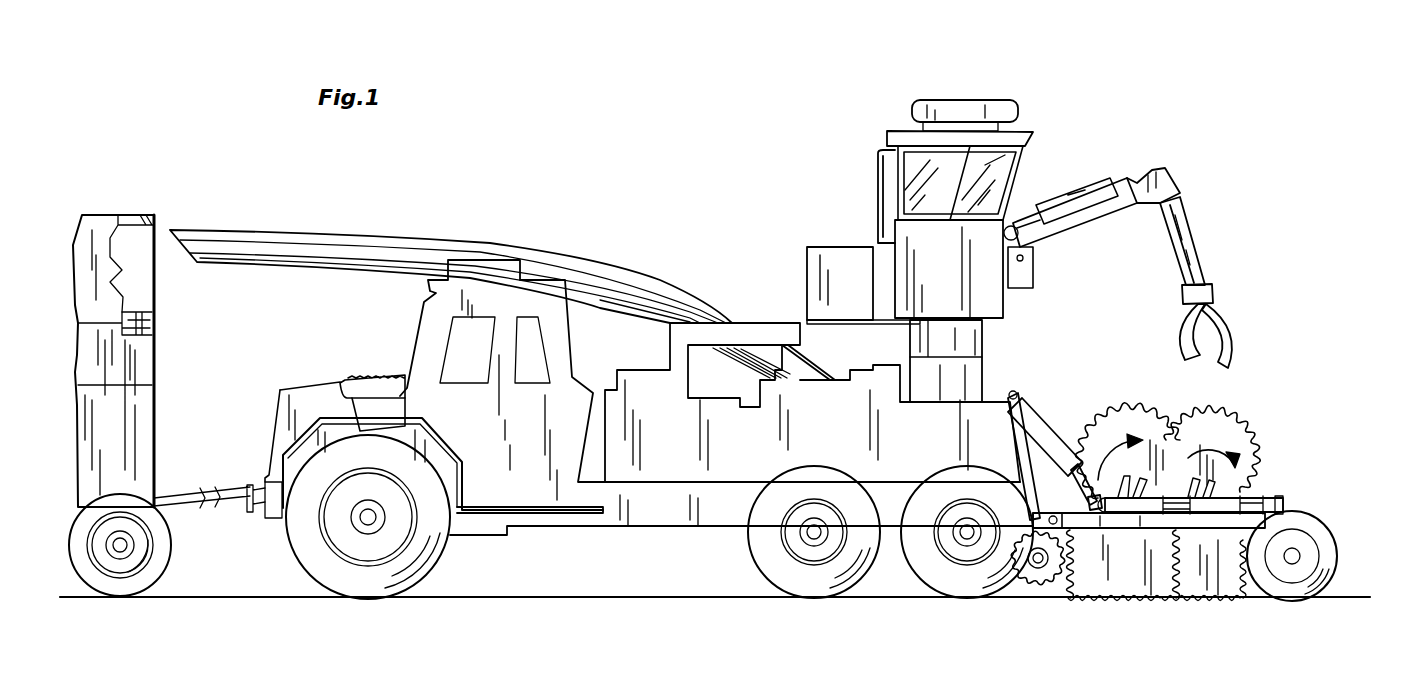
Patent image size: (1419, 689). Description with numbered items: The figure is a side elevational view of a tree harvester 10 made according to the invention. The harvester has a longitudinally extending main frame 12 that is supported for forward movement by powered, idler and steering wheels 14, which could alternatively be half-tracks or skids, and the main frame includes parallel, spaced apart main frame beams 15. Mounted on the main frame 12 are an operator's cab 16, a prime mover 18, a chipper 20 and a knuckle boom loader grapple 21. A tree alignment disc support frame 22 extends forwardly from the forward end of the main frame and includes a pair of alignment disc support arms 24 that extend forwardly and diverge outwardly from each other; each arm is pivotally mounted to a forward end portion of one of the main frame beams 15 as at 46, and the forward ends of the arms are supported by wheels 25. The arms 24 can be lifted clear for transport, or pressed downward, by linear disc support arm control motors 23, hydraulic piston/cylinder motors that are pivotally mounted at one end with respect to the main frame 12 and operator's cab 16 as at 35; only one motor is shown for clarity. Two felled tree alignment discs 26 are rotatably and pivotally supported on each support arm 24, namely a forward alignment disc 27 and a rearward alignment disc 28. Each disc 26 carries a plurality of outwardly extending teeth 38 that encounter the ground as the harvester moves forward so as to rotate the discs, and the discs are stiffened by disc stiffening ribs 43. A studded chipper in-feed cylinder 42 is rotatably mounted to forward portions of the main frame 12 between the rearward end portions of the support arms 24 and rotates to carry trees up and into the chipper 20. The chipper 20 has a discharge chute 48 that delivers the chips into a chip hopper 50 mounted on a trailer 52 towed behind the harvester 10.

The tree harvester 10 is at (722, 230).
The main frame 12 is at (640, 520).
The wheels 14 is at (343, 580).
The main frame beams 15 is at (1028, 514).
The operator's cab 16 is at (903, 125).
The prime mover 18 is at (385, 378).
The chipper 20 is at (993, 405).
The knuckle boom loader grapple 21 is at (1185, 172).
The tree alignment disc support frame 22 is at (1159, 545).
The disc support arm control motors 23 is at (1040, 417).
The alignment disc support arms 24 is at (1090, 522).
The wheels 25 is at (1313, 530).
The felled tree alignment discs 26 is at (1207, 600).
The forward alignment discs 27 is at (1207, 430).
The rearward alignment discs 28 is at (1127, 432).
The pivotal mounting of control motor 35 is at (1023, 384).
The teeth 38 is at (1127, 420).
The studded chipper in-feed cylinder 42 is at (1047, 573).
The disc stiffening ribs 43 is at (1210, 488).
The pivotal mounting of support arm 46 is at (1057, 513).
The discharge chute 48 is at (400, 245).
The chip hopper 50 is at (140, 345).
The trailer 52 is at (150, 500).